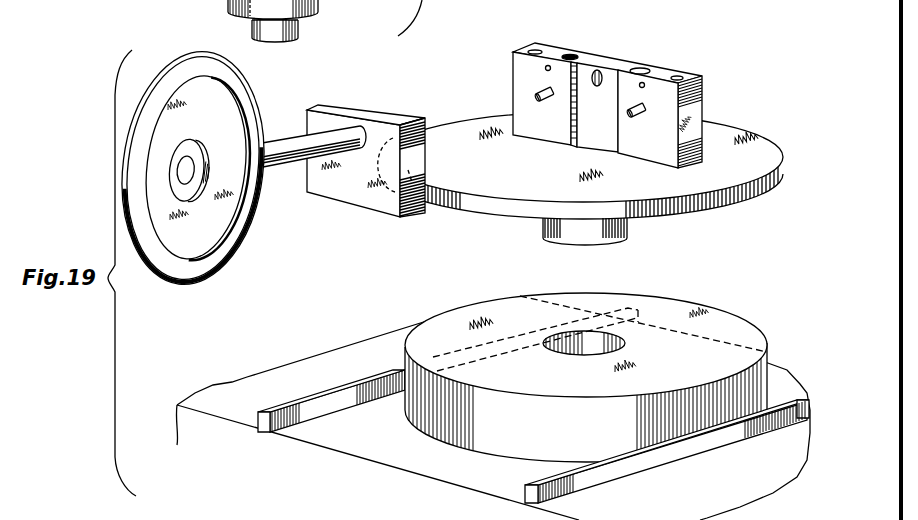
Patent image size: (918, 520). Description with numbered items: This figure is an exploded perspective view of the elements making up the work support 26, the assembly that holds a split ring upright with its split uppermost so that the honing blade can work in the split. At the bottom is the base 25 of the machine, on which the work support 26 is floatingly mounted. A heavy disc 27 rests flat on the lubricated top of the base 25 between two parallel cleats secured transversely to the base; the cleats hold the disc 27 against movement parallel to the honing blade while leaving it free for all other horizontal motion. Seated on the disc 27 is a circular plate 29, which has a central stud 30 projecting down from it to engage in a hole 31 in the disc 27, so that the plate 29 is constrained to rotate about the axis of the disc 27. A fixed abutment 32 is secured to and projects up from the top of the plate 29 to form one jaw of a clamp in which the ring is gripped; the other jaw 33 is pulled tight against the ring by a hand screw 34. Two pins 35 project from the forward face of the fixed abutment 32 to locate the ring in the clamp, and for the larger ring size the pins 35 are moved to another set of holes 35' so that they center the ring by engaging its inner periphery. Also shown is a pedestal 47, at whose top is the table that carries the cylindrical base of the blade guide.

The base 25 is at (352, 358).
The work support 26 is at (735, 52).
The heavy disc 27 is at (681, 310).
The circular plate 29 is at (737, 126).
The central stud 30 is at (628, 226).
The hole 31 is at (583, 348).
The fixed abutment 32 is at (553, 55).
The jaw 33 is at (356, 113).
The hand screw 34 is at (410, 113).
The pins 35 is at (601, 119).
The holes 35' is at (582, 63).
The pedestal 47 is at (252, 23).